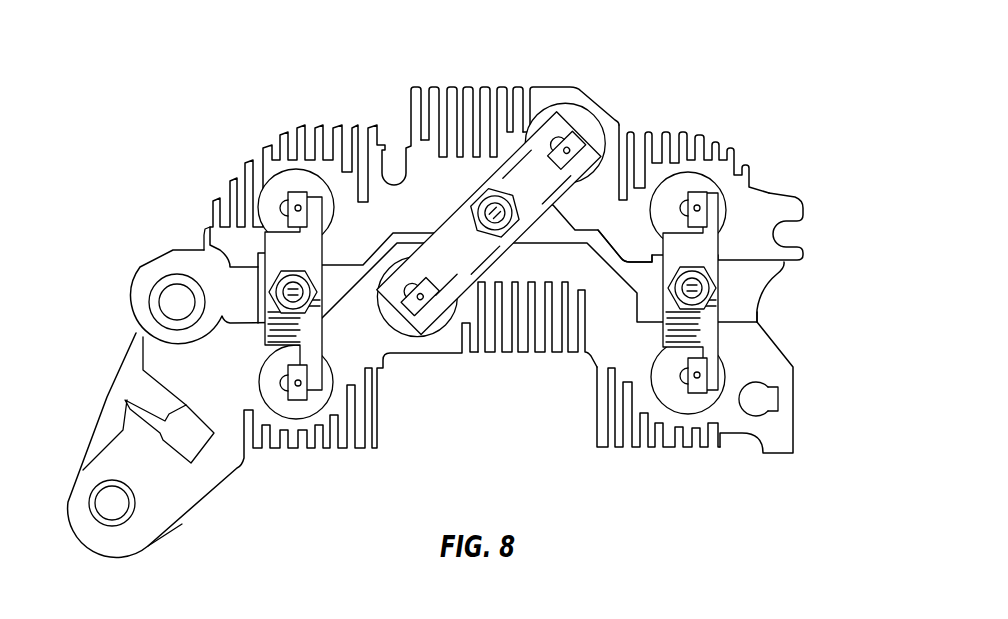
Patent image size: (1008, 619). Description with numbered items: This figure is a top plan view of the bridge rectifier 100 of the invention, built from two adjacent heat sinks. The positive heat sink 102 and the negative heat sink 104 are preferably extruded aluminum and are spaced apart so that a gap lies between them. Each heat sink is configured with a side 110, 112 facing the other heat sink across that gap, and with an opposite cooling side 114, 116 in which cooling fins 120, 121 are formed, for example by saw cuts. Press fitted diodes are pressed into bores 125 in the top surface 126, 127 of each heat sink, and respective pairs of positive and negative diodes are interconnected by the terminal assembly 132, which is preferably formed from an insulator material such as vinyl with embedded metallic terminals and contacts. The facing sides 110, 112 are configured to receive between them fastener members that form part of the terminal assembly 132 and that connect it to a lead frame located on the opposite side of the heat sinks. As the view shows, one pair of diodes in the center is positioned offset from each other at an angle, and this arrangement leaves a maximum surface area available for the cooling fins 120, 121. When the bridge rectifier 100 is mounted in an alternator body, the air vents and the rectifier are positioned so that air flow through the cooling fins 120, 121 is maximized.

The bridge rectifier 100 is at (365, 88).
The positive heat sink 102 is at (770, 449).
The negative heat sink 104 is at (765, 192).
The side of positive heat sink 110 is at (240, 307).
The side of negative heat sink 112 is at (343, 280).
The cooling side of positive heat sink 114 is at (238, 469).
The cooling side of negative heat sink 116 is at (618, 122).
The cooling fins 120 is at (601, 449).
The cooling fins 121 is at (483, 87).
The bores 125 is at (727, 230).
The top surface of positive heat sink 126 is at (607, 337).
The top surface of negative heat sink 127 is at (634, 203).
The terminal assembly 132 is at (764, 294).